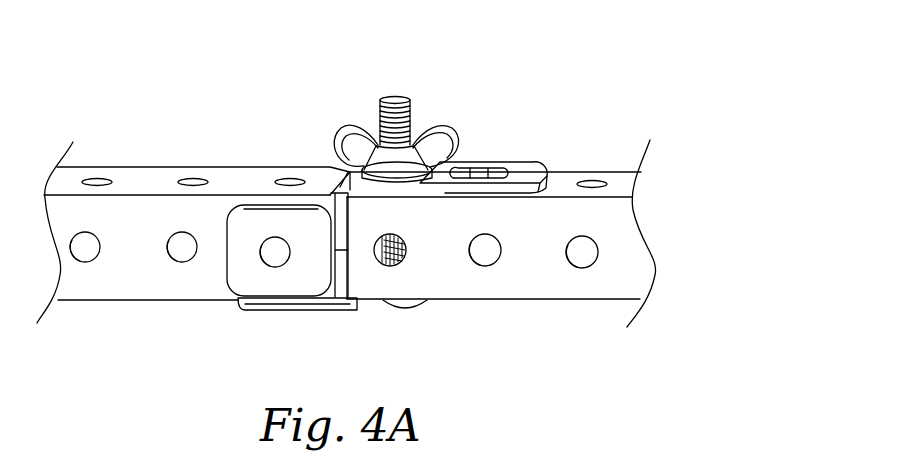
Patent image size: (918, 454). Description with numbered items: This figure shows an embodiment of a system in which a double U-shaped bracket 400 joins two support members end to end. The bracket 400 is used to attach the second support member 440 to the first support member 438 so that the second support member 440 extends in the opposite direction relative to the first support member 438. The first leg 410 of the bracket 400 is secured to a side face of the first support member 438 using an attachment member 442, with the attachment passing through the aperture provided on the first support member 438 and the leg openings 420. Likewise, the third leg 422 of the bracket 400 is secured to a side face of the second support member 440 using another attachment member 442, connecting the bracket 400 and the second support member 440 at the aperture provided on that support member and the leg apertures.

The double U-shaped bracket 400 is at (461, 82).
The first leg 410 is at (540, 161).
The opening 420 is at (485, 166).
The third leg 422 is at (238, 298).
The first support member 438 is at (497, 303).
The second support member 440 is at (118, 300).
The attachment member 442 is at (450, 128).